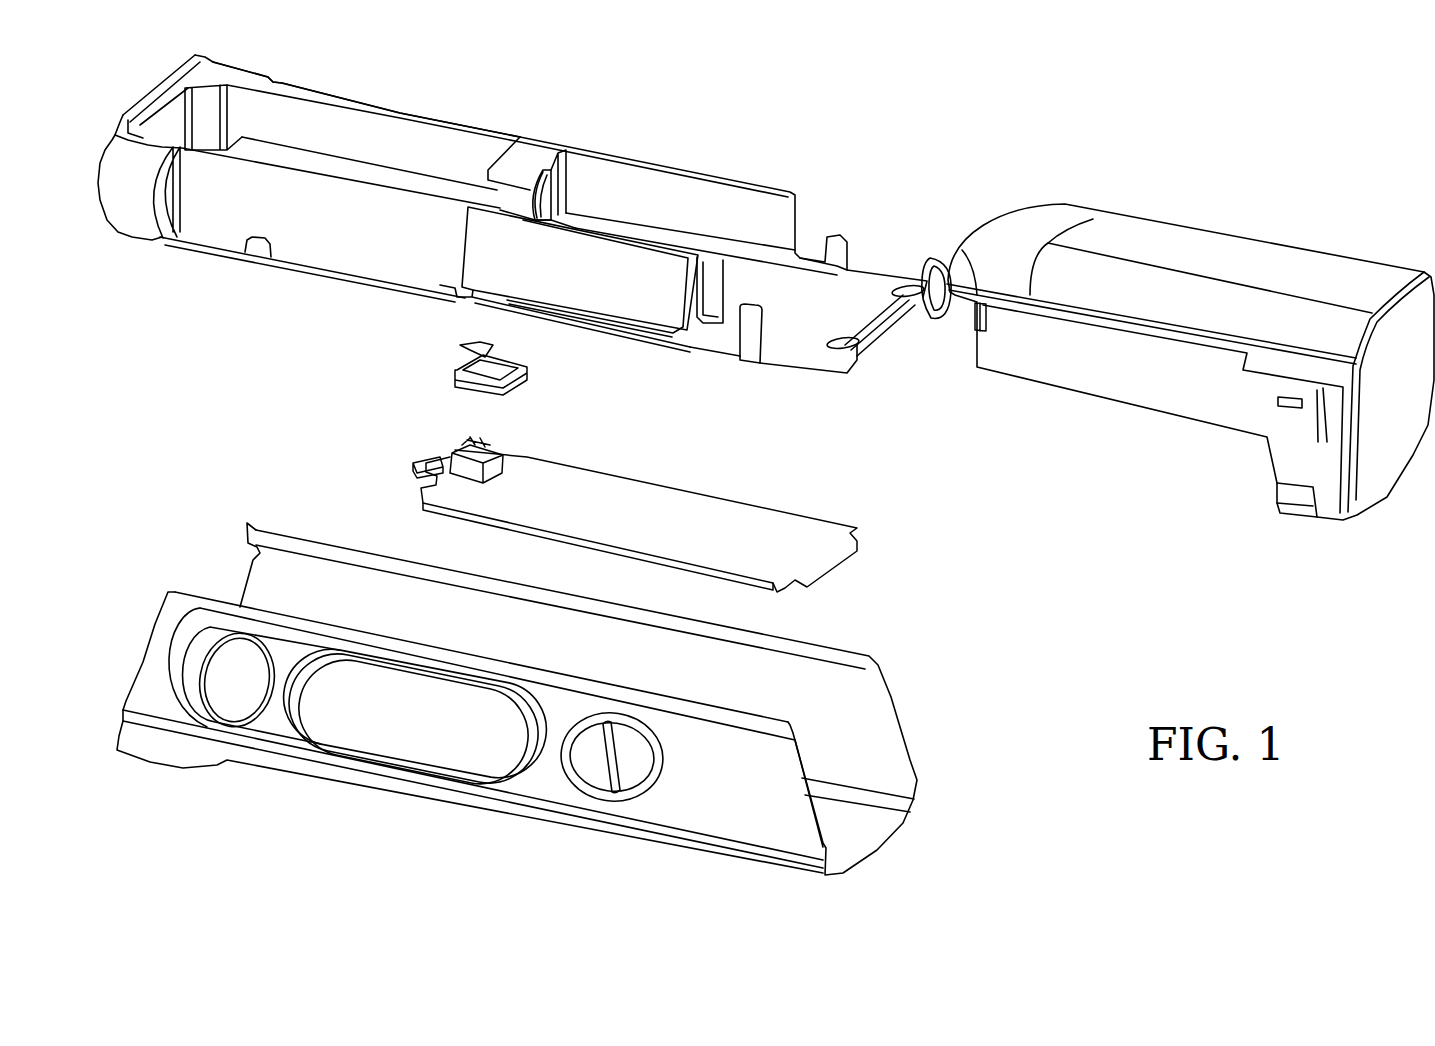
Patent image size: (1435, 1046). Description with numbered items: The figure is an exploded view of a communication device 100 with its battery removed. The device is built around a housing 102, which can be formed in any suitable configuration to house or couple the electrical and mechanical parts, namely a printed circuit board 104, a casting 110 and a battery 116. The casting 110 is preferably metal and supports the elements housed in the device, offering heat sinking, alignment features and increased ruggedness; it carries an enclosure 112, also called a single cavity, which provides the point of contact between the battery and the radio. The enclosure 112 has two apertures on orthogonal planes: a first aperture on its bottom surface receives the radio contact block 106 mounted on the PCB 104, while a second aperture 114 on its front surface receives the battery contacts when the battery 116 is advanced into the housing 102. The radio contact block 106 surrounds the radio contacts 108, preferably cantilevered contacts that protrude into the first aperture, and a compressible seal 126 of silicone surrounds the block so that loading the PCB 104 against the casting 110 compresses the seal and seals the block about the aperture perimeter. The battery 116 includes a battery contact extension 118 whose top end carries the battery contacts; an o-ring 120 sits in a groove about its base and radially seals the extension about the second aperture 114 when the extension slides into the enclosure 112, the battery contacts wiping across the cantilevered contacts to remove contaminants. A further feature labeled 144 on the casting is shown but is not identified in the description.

The communication device 100 is at (1242, 152).
The housing 102 is at (847, 313).
The printed circuit board 104 is at (686, 495).
The radio contact block 106 is at (430, 462).
The radio contacts 108 is at (487, 431).
The casting 110 is at (430, 247).
The enclosure 112 is at (542, 153).
The second aperture 114 is at (542, 202).
The battery 116 is at (1217, 235).
The battery contact extension 118 is at (973, 321).
The o-ring 120 is at (923, 271).
The compressible seal 126 is at (512, 356).
The rim 144 is at (307, 86).